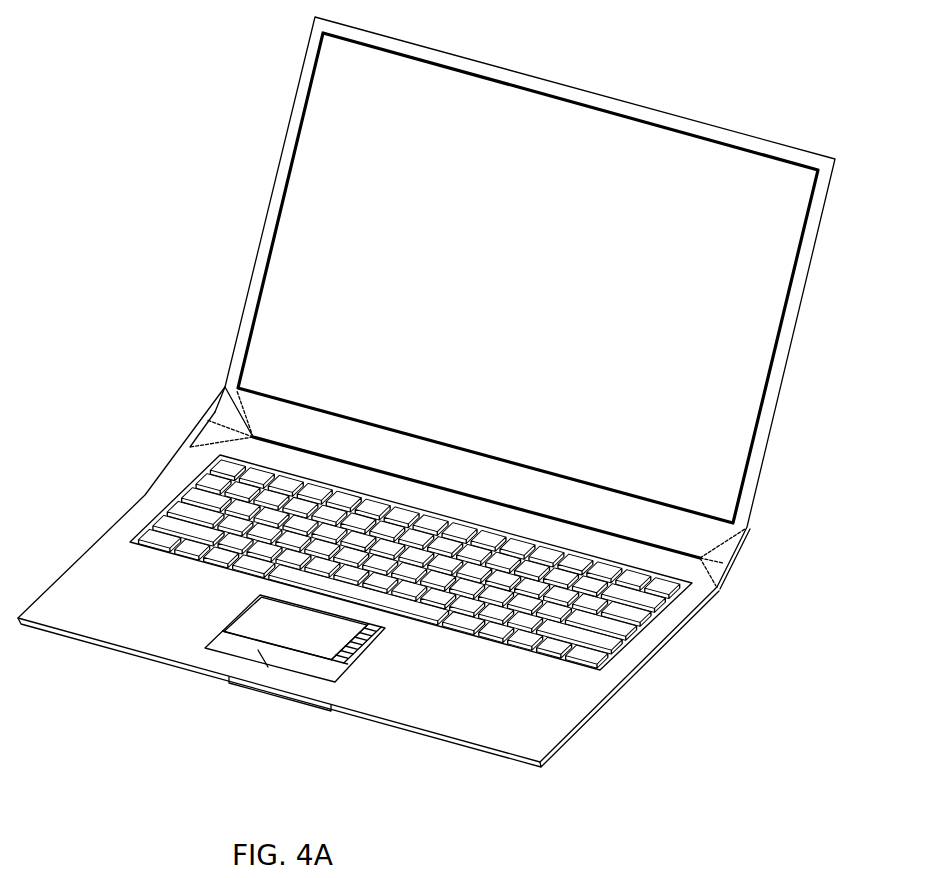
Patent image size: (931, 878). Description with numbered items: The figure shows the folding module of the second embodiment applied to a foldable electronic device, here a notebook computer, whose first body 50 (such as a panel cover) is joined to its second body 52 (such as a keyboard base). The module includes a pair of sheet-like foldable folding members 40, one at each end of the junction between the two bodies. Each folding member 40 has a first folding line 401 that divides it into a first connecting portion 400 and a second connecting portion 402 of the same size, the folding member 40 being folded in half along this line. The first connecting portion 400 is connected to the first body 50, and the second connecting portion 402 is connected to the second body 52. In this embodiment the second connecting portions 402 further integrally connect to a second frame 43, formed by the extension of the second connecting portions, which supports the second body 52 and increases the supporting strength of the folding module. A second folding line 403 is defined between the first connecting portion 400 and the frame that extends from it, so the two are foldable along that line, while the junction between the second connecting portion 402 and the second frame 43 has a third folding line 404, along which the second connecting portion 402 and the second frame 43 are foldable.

The folding member 40 is at (219, 380).
The first connecting portion 400 is at (212, 409).
The first folding line 401 is at (230, 414).
The second connecting portion 402 is at (203, 436).
The second folding line 403 is at (250, 423).
The third folding line 404 is at (212, 446).
The second frame 43 is at (247, 687).
The first body 50 is at (312, 211).
The second body 52 is at (112, 563).